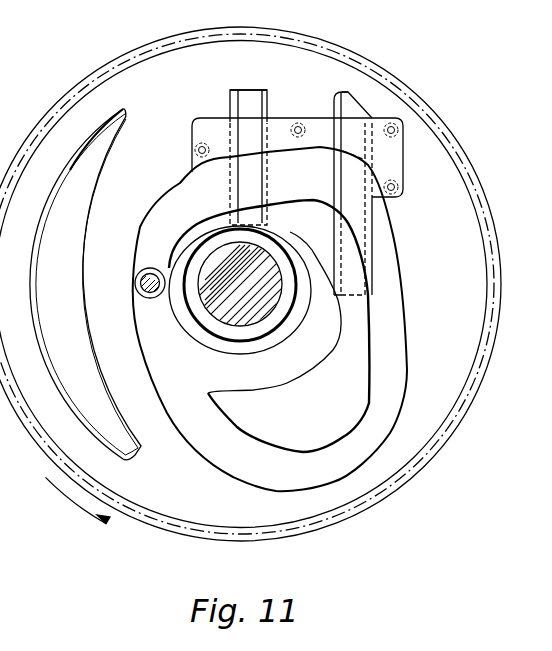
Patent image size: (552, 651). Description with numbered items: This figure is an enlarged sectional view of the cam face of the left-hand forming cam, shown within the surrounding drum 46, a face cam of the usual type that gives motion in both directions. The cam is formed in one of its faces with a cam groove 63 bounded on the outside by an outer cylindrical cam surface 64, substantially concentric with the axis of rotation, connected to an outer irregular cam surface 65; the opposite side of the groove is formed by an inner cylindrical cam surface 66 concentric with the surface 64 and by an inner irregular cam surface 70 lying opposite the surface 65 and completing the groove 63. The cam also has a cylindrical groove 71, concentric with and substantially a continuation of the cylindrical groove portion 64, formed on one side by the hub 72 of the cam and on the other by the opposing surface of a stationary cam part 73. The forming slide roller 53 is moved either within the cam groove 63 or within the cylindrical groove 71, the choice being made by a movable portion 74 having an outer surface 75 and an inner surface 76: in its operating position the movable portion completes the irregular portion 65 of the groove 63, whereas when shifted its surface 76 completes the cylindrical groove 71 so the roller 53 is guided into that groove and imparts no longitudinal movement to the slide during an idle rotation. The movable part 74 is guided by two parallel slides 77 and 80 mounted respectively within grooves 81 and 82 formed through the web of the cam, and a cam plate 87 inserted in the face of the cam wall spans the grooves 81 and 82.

The drum 46 is at (440, 428).
The forming slide roller 53 is at (140, 279).
The cam groove 63 is at (357, 460).
The outer cylindrical cam surface 64 is at (157, 263).
The outer irregular cam surface 65 is at (293, 487).
The inner cylindrical cam surface 66 is at (204, 345).
The inner irregular cam surface 70 is at (368, 403).
The cylindrical groove 71 is at (263, 368).
The hub 72 is at (192, 323).
The stationary cam part 73 is at (345, 423).
The movable portion 74 is at (351, 246).
The outer surface 75 is at (352, 222).
The inner surface 76 is at (316, 266).
The slide 77 is at (348, 177).
The slide 80 is at (248, 177).
The groove 81 is at (343, 105).
The groove 82 is at (238, 100).
The cam plate 87 is at (200, 136).